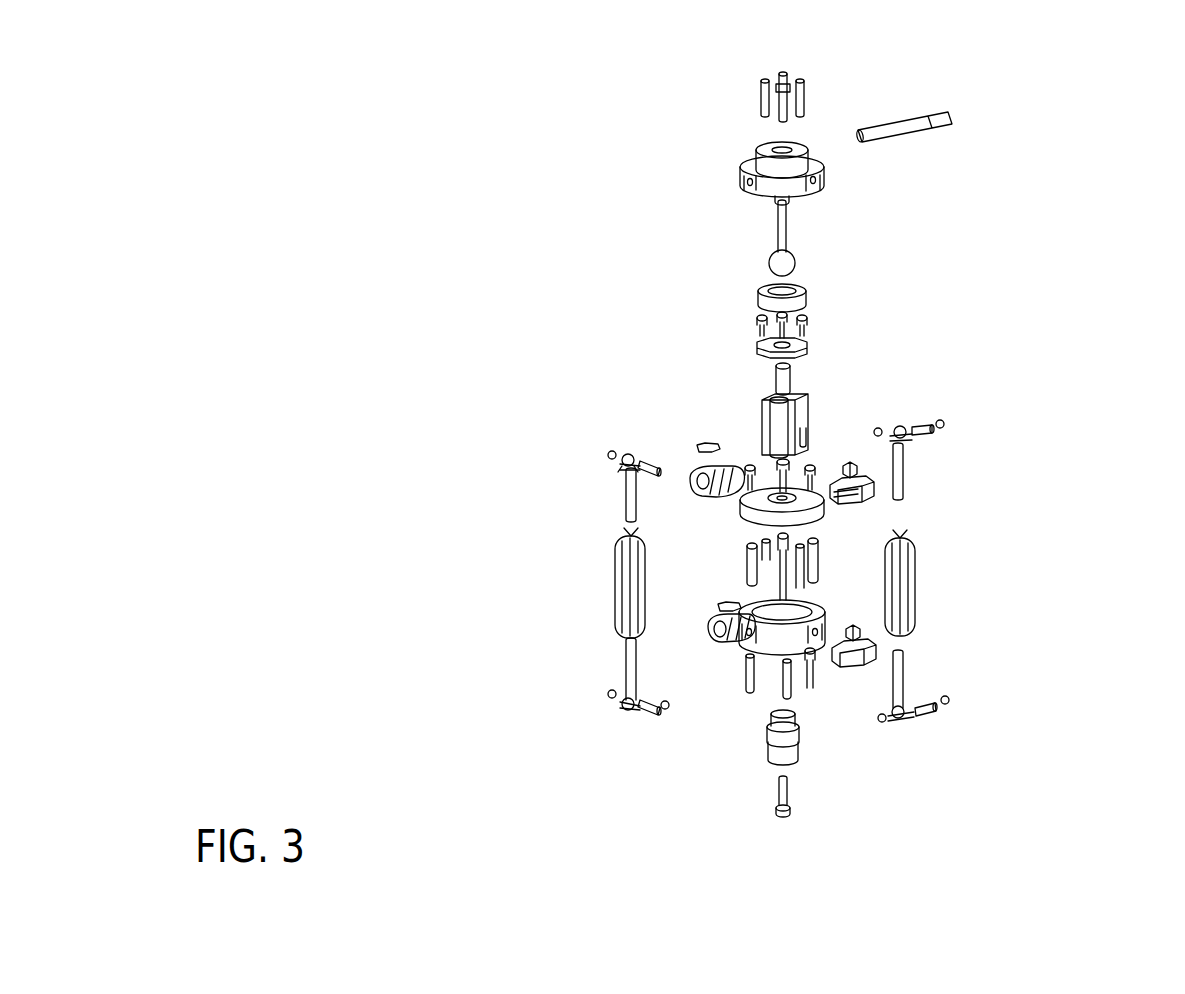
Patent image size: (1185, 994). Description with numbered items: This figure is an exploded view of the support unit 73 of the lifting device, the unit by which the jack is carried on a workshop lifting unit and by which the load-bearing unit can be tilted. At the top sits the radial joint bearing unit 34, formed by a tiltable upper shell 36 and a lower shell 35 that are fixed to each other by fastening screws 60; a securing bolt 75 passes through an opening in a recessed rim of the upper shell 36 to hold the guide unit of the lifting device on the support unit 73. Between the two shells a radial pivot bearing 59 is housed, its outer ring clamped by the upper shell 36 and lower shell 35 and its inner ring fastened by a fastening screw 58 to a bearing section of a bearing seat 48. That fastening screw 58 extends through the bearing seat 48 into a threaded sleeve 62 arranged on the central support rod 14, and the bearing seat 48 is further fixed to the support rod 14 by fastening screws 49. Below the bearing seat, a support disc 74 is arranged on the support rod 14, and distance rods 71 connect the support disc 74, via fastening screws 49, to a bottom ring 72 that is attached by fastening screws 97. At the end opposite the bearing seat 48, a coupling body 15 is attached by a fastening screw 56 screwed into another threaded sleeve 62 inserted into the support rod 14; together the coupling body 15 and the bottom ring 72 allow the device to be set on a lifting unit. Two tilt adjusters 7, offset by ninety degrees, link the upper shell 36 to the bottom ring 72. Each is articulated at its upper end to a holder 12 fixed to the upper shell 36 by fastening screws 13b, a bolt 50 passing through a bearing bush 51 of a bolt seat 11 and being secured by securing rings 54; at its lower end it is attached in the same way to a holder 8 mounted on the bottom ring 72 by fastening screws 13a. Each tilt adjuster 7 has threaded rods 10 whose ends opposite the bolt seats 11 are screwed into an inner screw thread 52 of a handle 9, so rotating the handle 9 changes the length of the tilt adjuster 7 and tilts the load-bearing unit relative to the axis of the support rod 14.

The tilt adjuster 7 is at (974, 622).
The holder 8 is at (730, 633).
The handle 9 is at (620, 602).
The threaded rod 10 is at (625, 660).
The bolt seat 11 is at (618, 460).
The holder 12 is at (732, 490).
The fastening screw 13a is at (851, 630).
The fastening screw 13b is at (847, 468).
The support rod 14 is at (760, 415).
The coupling body 15 is at (790, 752).
The radial joint bearing unit 34 is at (934, 214).
The lower shell 35 is at (803, 295).
The upper shell 36 is at (768, 185).
The bearing seat 48 is at (800, 345).
The fastening screw 49 is at (807, 322).
The bolt 50 is at (650, 462).
The bearing bush 51 is at (628, 455).
The inner screw thread 52 is at (634, 536).
The securing ring 54 is at (610, 452).
The fastening screw 56 is at (790, 798).
The fastening screw 58 is at (790, 222).
The radial pivot bearing 59 is at (792, 258).
The fastening screw 60 is at (805, 95).
The threaded sleeve 62 is at (792, 380).
The distance rod 71 is at (815, 560).
The bottom ring 72 is at (783, 640).
The support unit 73 is at (505, 578).
The support disc 74 is at (755, 520).
The securing bolt 75 is at (898, 128).
The fastening screw 97 is at (815, 668).